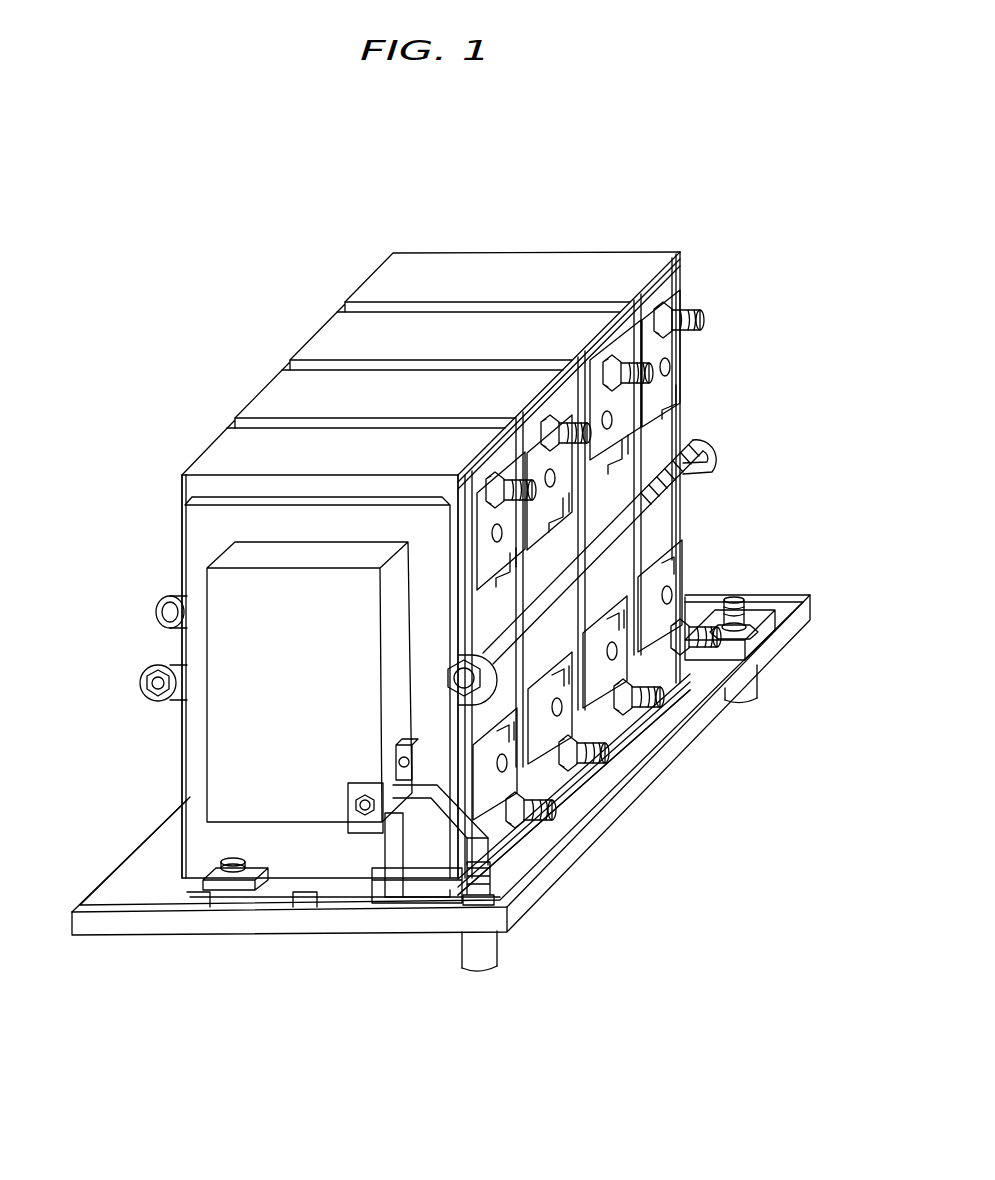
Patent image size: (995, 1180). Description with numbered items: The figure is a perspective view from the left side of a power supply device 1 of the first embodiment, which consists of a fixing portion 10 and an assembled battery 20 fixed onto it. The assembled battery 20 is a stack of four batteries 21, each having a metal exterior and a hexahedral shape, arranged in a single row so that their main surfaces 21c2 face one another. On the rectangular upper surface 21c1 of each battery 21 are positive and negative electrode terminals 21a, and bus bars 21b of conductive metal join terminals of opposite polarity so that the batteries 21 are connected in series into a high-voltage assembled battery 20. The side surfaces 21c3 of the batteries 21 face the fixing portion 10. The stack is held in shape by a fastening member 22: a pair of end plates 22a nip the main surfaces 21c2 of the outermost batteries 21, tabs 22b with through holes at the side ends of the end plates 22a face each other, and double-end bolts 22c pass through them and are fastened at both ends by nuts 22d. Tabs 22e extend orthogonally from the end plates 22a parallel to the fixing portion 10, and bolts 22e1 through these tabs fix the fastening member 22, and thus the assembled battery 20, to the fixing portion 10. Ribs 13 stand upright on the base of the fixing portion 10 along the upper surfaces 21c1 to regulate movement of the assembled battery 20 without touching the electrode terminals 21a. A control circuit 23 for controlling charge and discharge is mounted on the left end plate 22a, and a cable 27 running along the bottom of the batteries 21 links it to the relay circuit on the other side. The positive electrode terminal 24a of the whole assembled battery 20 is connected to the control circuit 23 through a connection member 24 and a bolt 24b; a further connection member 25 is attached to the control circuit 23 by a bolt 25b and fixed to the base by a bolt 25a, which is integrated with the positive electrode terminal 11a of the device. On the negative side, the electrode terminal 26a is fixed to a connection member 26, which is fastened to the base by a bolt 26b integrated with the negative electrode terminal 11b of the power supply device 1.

The power supply device 1 is at (637, 150).
The fixing portion 10 is at (603, 851).
The positive electrode terminal 11a is at (475, 962).
The negative electrode terminal 11b is at (757, 672).
The ribs 13 is at (547, 793).
The assembled battery 20 is at (305, 302).
The battery 21 is at (541, 268).
The electrode terminal 21a is at (693, 317).
The bus bar 21b is at (680, 287).
The upper surface 21c1 is at (667, 418).
The main surface 21c2 is at (188, 487).
The side surface 21c3 is at (412, 258).
The fastening member 22 is at (803, 770).
The end plate 22a is at (560, 793).
The tab 22b is at (617, 662).
The double-end bolt 22c is at (540, 603).
The nut 22d is at (497, 678).
The tab 22e is at (240, 888).
The bolt 22e1 is at (228, 878).
The control circuit 23 is at (220, 738).
The connection member 24 is at (440, 800).
The electrode terminal 24a is at (542, 817).
The bolt 24b is at (392, 752).
The connection member 25 is at (393, 880).
The bolt 25a is at (492, 913).
The bolt 25b is at (350, 800).
The connection member 26 is at (725, 655).
The electrode terminal 26a is at (700, 622).
The bolt 26b is at (745, 605).
The cable 27 is at (172, 600).